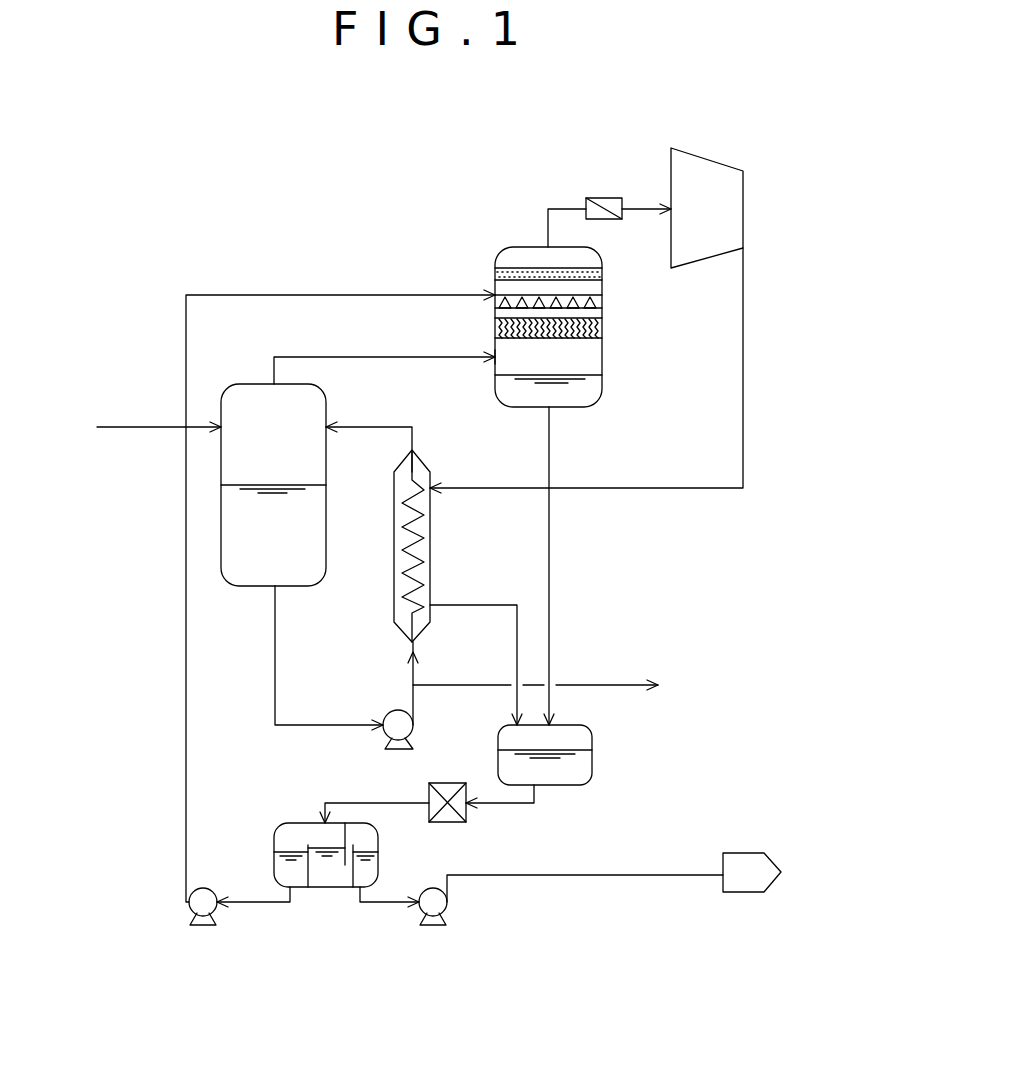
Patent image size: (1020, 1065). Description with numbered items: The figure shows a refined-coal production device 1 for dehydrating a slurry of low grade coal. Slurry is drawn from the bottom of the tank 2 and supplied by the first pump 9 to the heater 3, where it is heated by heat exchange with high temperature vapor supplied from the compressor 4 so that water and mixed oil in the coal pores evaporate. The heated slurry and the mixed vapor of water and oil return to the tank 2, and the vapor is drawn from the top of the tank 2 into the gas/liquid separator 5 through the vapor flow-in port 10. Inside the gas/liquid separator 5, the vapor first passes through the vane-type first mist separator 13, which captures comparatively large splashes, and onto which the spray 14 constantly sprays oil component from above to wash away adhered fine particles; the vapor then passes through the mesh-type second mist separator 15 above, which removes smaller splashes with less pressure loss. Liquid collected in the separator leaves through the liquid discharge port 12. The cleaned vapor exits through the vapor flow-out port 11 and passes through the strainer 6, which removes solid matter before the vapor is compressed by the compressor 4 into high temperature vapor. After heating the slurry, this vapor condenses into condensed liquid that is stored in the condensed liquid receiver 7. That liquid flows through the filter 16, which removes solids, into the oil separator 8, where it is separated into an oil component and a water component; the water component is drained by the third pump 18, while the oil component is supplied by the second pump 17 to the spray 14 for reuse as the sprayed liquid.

The refined-coal production device 1 is at (183, 182).
The tank 2 is at (250, 384).
The heater 3 is at (430, 468).
The compressor 4 is at (713, 165).
The gas/liquid separator 5 is at (512, 247).
The strainer 6 is at (605, 198).
The condensed liquid receiver 7 is at (592, 745).
The oil separator 8 is at (327, 893).
The first pump 9 is at (388, 712).
The vapor flow-in port 10 is at (493, 361).
The vapor flow-out port 11 is at (548, 247).
The liquid discharge port 12 is at (551, 410).
The first mist separator 13 is at (603, 328).
The spray 14 is at (603, 302).
The second mist separator 15 is at (603, 276).
The filter 16 is at (450, 822).
The second pump 17 is at (205, 930).
The third pump 18 is at (435, 930).